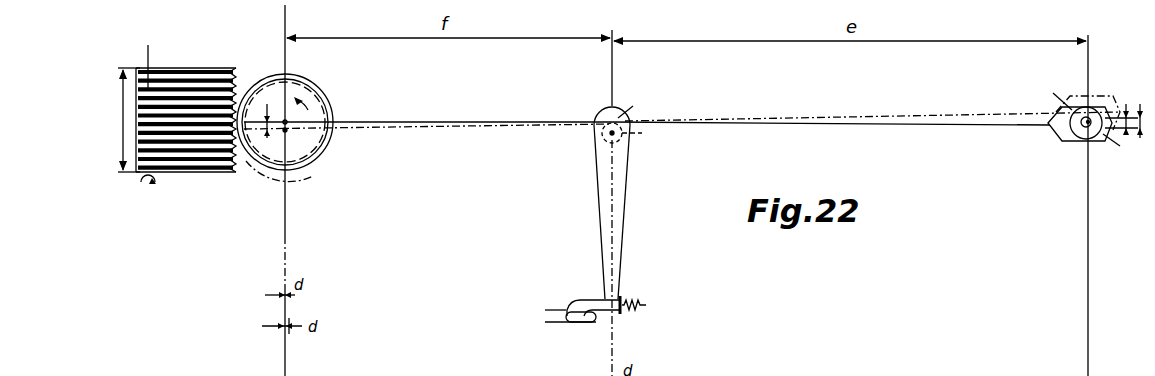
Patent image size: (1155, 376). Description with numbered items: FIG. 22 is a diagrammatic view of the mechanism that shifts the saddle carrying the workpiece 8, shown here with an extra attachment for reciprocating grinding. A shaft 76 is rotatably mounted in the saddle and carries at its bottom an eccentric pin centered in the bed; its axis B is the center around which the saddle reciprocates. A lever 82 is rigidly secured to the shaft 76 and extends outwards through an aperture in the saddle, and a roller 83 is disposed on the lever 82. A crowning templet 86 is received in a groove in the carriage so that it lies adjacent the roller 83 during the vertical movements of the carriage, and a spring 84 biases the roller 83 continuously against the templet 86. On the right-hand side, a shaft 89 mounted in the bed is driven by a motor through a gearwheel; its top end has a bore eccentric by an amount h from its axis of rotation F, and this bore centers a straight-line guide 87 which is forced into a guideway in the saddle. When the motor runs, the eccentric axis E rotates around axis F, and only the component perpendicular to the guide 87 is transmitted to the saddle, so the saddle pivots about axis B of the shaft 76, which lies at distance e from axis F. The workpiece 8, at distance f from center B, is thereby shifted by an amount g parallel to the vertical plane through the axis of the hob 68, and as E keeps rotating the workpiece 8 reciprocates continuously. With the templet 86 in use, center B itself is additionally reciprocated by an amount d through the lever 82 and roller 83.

The hob 68 is at (195, 172).
The workpiece 8 is at (300, 168).
The shaft 76 is at (631, 130).
The lever 82 is at (622, 205).
The spring 84 is at (636, 312).
The roller 83 is at (588, 323).
The crowning templet 86 is at (557, 325).
The shaft 89 is at (1073, 146).
The straight-line guide 87 is at (1098, 140).